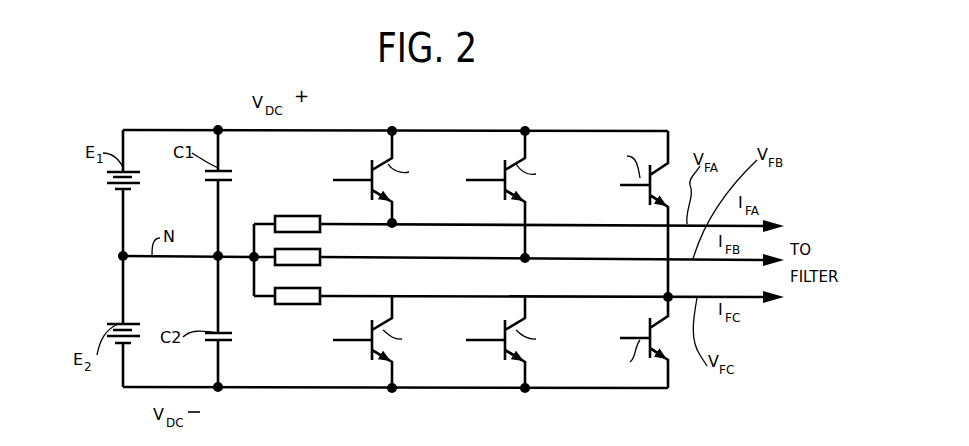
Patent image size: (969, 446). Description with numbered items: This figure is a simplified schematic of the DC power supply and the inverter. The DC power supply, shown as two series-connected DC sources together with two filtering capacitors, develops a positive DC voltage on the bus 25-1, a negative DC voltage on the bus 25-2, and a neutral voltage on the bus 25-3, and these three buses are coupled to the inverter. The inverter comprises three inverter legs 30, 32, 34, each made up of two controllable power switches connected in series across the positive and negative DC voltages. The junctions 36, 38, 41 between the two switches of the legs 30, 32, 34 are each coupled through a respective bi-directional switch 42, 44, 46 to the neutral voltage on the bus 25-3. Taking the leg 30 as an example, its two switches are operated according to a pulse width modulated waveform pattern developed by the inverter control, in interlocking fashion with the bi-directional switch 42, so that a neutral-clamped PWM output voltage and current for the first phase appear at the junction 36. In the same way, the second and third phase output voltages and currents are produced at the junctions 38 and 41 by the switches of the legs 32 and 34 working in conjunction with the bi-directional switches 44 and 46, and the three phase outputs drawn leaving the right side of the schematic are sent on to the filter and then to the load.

The bus 25-1 is at (343, 131).
The bus 25-2 is at (332, 388).
The bus 25-3 is at (205, 258).
The inverter leg 30 is at (360, 217).
The inverter leg 32 is at (497, 219).
The inverter leg 34 is at (601, 218).
The junction 36 is at (396, 221).
The junction 38 is at (522, 256).
The junction 41 is at (665, 295).
The bi-directional switch 42 is at (300, 216).
The bi-directional switch 44 is at (312, 266).
The bi-directional switch 46 is at (300, 305).